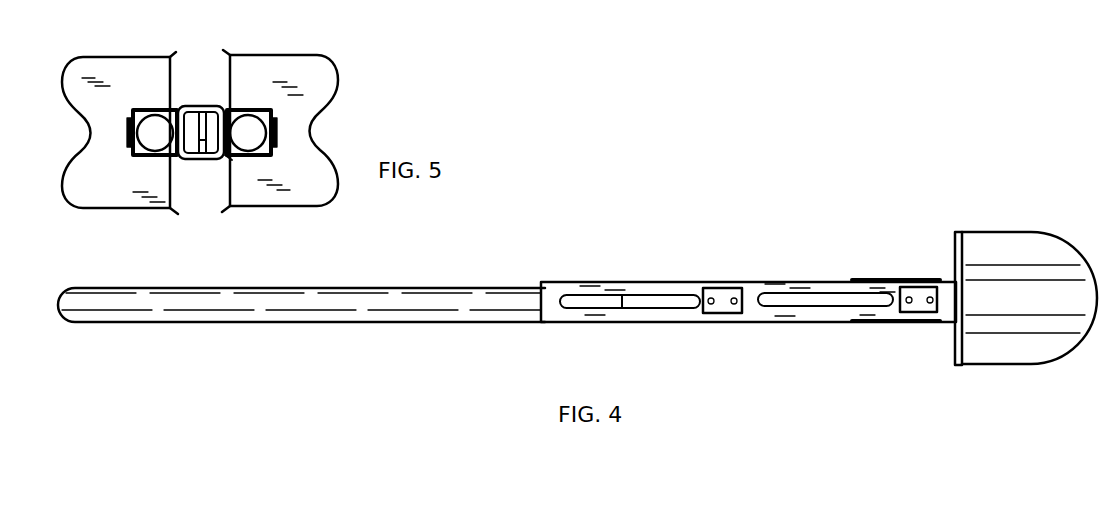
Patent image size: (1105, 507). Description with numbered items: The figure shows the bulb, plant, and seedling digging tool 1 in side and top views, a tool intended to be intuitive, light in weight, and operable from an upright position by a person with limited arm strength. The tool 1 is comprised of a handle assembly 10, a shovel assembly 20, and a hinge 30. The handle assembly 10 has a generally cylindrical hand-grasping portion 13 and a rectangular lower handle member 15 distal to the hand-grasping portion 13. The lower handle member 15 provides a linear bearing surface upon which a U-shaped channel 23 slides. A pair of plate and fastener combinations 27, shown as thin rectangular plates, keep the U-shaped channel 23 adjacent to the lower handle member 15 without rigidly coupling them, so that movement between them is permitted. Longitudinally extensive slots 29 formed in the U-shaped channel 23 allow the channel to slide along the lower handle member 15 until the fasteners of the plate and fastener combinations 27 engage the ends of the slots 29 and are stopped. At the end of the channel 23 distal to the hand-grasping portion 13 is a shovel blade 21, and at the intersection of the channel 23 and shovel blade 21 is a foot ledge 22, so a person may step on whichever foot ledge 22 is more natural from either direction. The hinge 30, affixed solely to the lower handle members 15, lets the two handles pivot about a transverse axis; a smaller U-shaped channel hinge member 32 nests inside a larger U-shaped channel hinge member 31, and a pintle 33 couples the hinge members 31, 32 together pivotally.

In FIG. 5, the bulb, plant, and seedling digging tool 1 is at (84, 54).
In FIG. 4, the bulb, plant, and seedling digging tool 1 is at (789, 180).
In FIG. 5, the handle assembly 10 is at (156, 135).
In FIG. 4, the handle assembly 10 is at (178, 323).
In FIG. 5, the hand-grasping portion 13 is at (242, 136).
In FIG. 4, the hand-grasping portion 13 is at (268, 306).
In FIG. 5, the lower handle member 15 is at (228, 157).
In FIG. 4, the shovel assembly 20 is at (561, 322).
In FIG. 4, the shovel blade 21 is at (1015, 252).
In FIG. 5, the foot ledge 22 is at (323, 80).
In FIG. 5, the U-shaped channel 23 is at (248, 110).
In FIG. 5, the plate and fastener combination 27 is at (273, 132).
In FIG. 4, the plate and fastener combination 27 is at (723, 298).
In FIG. 4, the slot 29 is at (793, 300).
In FIG. 5, the hinge 30 is at (211, 105).
In FIG. 5, the larger U-shaped channel hinge member 31 is at (201, 102).
In FIG. 5, the smaller U-shaped channel hinge member 32 is at (180, 108).
In FIG. 5, the pintle 33 is at (203, 142).